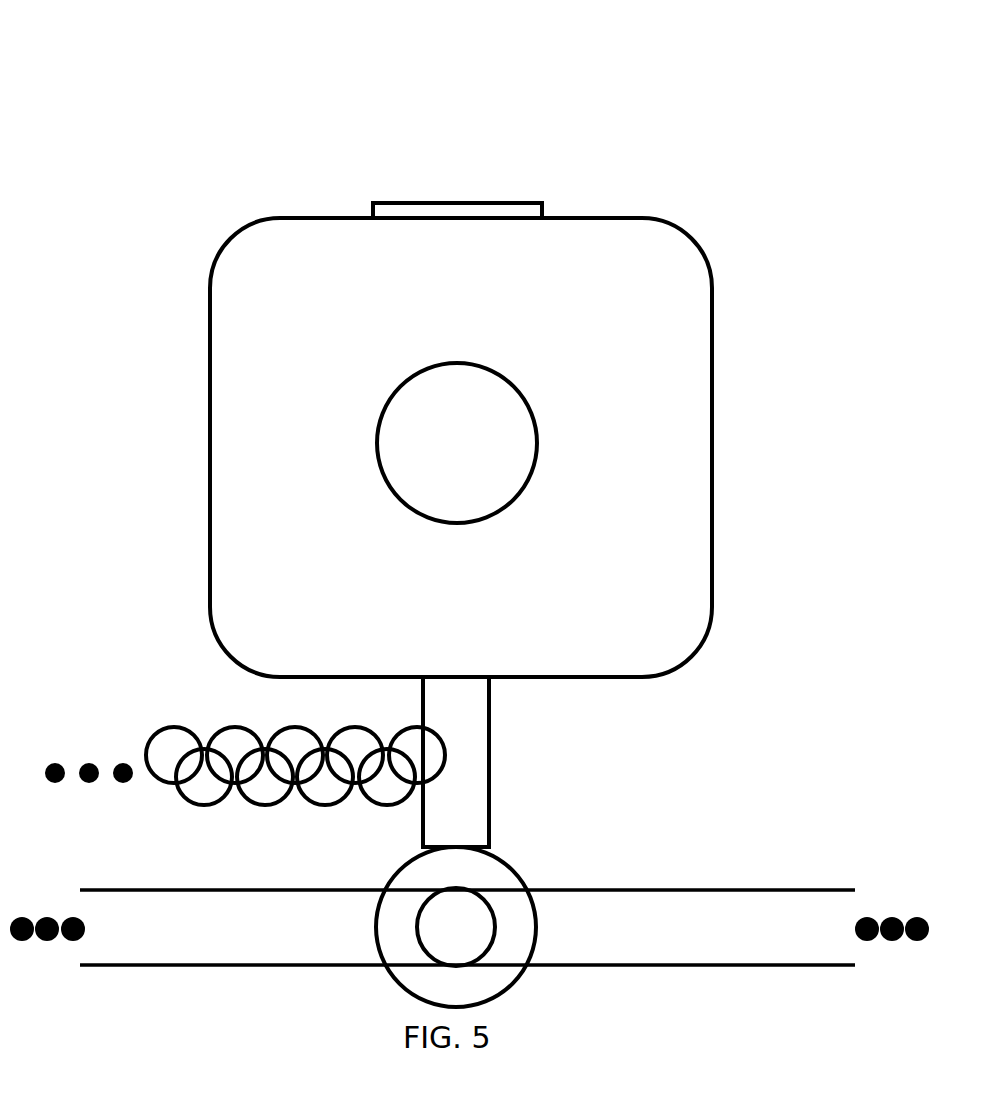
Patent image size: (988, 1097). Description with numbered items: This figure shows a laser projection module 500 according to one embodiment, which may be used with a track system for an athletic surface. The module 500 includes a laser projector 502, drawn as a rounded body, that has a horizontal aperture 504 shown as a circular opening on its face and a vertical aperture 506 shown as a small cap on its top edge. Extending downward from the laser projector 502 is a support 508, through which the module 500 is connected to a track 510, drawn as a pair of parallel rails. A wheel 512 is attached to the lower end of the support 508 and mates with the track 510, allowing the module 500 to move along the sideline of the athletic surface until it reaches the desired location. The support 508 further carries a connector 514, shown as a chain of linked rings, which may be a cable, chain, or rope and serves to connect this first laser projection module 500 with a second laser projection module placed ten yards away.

The laser projection module 500 is at (722, 163).
The laser projector 502 is at (626, 321).
The horizontal aperture 504 is at (415, 465).
The vertical aperture 506 is at (417, 207).
The support 508 is at (482, 732).
The track 510 is at (318, 952).
The wheel 512 is at (469, 917).
The connector 514 is at (297, 743).